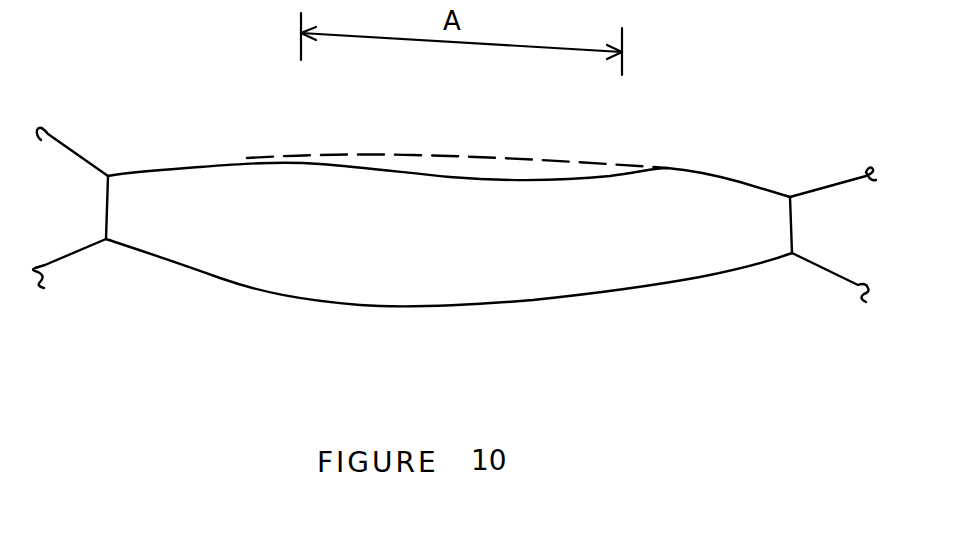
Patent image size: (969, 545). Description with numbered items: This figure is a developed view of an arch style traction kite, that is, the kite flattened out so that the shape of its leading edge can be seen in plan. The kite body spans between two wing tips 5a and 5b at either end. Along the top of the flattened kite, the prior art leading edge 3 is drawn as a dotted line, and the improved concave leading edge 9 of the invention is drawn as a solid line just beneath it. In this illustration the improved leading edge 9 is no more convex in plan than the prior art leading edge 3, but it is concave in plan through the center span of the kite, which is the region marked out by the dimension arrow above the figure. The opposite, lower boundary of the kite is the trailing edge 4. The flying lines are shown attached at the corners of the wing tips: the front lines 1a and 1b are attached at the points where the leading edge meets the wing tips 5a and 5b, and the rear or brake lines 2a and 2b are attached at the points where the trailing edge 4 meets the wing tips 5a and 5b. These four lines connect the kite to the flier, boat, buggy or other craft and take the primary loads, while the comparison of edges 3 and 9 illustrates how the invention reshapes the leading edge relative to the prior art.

The front line 1a is at (75, 150).
The rear or brake line 2a is at (70, 252).
The wing tip 5a is at (105, 209).
The front line 1b is at (823, 180).
The brake line 2b is at (828, 273).
The wing tip 5b is at (794, 222).
The leading edge 3 is at (413, 157).
The improved concave leading edge 9 is at (418, 177).
The trailing edge 4 is at (413, 310).